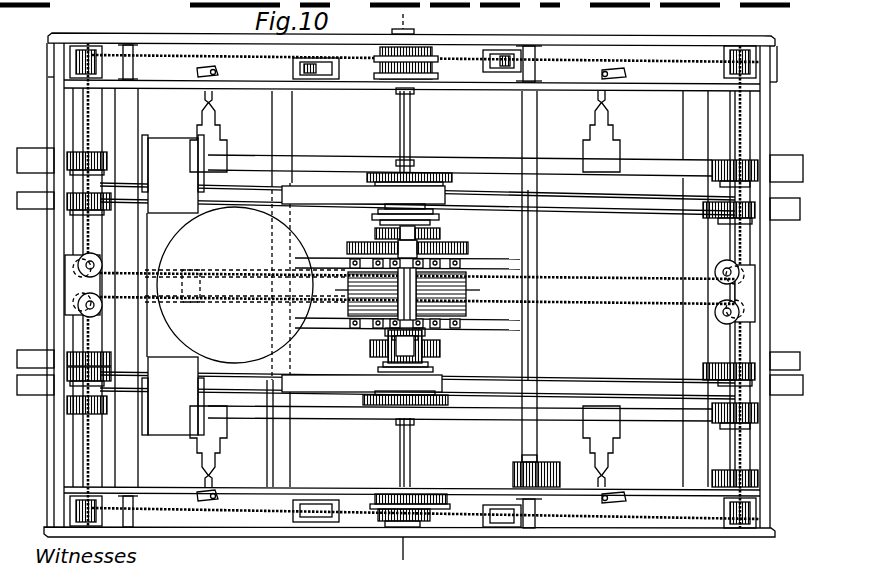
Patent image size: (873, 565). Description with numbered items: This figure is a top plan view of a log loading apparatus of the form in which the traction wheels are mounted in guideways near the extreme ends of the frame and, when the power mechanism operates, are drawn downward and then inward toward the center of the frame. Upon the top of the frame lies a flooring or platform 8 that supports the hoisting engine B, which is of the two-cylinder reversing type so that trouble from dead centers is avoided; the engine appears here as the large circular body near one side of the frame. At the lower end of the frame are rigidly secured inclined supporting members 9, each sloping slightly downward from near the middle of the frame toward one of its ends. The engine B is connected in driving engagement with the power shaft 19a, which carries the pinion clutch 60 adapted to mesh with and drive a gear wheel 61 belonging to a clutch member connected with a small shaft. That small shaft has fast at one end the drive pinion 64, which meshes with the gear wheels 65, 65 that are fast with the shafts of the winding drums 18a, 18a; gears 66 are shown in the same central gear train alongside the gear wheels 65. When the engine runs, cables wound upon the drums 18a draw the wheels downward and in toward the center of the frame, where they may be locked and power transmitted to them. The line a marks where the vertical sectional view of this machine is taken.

The flooring or platform 8 is at (173, 285).
The inclined supporting member 9 is at (245, 262).
The hoisting engine B is at (235, 285).
The section line a— a is at (403, 245).
The drive pinion 64 is at (428, 230).
The gear wheel 65 is at (370, 246).
The gear 66 is at (367, 253).
The winding drum 18a is at (352, 290).
The power shaft 19a is at (388, 320).
The pinion clutch 60 is at (390, 346).
The gear wheel 61 is at (440, 342).